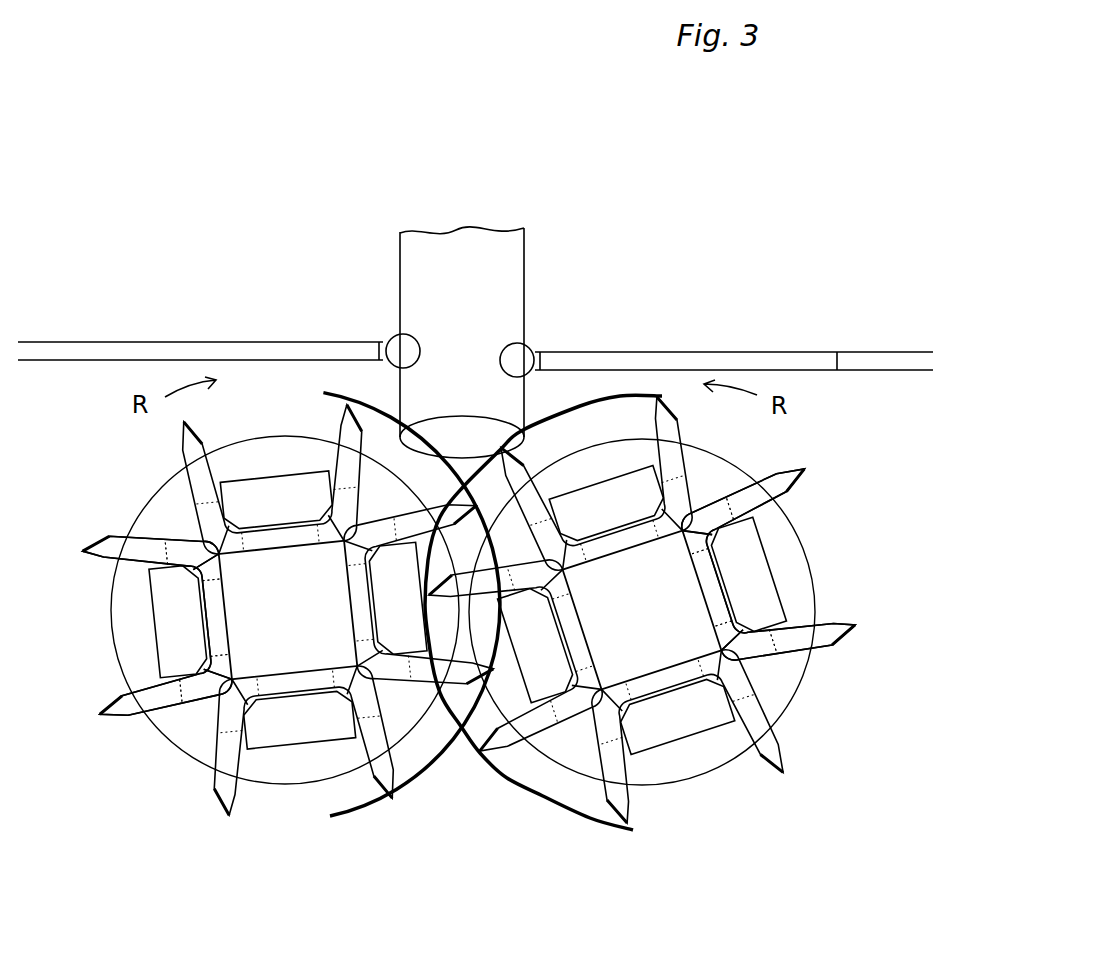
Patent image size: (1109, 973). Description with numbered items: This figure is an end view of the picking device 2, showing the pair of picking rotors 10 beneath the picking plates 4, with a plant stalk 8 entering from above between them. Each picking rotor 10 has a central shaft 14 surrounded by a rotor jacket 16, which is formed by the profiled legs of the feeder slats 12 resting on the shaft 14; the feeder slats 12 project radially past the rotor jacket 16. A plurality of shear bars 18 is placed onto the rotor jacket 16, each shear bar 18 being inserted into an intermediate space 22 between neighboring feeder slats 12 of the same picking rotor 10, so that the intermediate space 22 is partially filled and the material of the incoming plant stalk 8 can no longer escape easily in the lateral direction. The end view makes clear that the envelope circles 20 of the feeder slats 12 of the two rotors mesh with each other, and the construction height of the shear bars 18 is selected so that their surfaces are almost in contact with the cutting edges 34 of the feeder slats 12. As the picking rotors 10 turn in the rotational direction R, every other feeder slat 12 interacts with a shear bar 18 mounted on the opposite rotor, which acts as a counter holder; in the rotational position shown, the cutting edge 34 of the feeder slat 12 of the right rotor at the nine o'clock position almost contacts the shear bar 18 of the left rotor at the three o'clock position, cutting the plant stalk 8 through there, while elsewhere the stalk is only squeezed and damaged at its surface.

The picking device 2 is at (288, 118).
The picking plates 4 is at (262, 353).
The plant stalk 8 is at (448, 325).
The picking rotors 10 is at (152, 842).
The feeder slats 12 is at (155, 703).
The shaft 14 is at (292, 625).
The rotor jacket 16 is at (480, 610).
The shear bars 18 is at (250, 523).
The envelope circles 20 is at (516, 786).
The intermediate space 22 is at (307, 805).
The cutting edge 34 is at (494, 660).